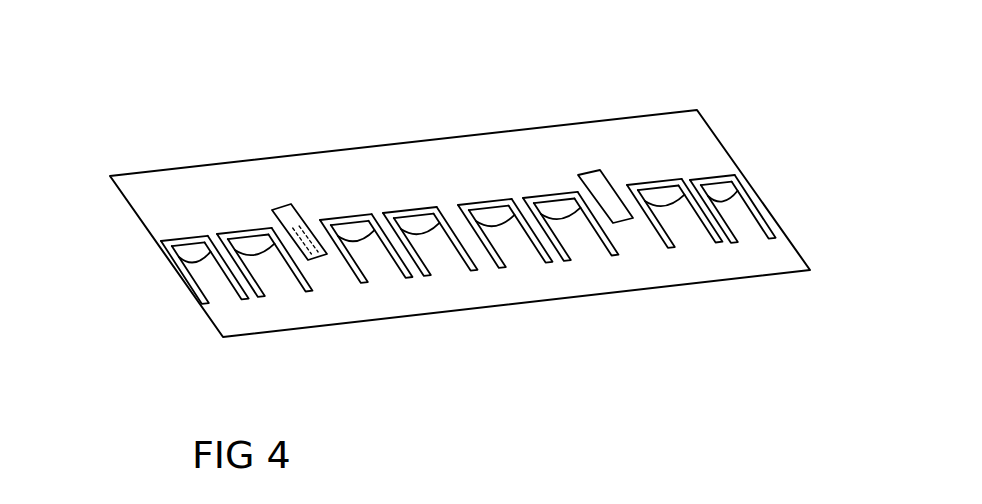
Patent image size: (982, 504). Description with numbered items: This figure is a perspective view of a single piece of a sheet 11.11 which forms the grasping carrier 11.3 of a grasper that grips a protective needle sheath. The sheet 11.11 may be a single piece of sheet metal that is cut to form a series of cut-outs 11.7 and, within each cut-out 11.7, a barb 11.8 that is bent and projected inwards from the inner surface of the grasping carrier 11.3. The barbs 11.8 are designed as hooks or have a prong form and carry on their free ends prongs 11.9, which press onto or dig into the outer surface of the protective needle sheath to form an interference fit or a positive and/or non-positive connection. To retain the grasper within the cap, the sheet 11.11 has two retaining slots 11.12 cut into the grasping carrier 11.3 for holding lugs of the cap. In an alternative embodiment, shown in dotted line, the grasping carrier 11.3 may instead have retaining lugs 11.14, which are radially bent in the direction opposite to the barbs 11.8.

The sheet 11.11 is at (515, 112).
The grasping carrier 11.3 is at (432, 160).
The cut-out 11.7 is at (168, 245).
The barb 11.8 is at (200, 290).
The prong 11.9 is at (207, 247).
The retaining slot 11.12 is at (283, 210).
The retaining lug 11.14 is at (297, 220).